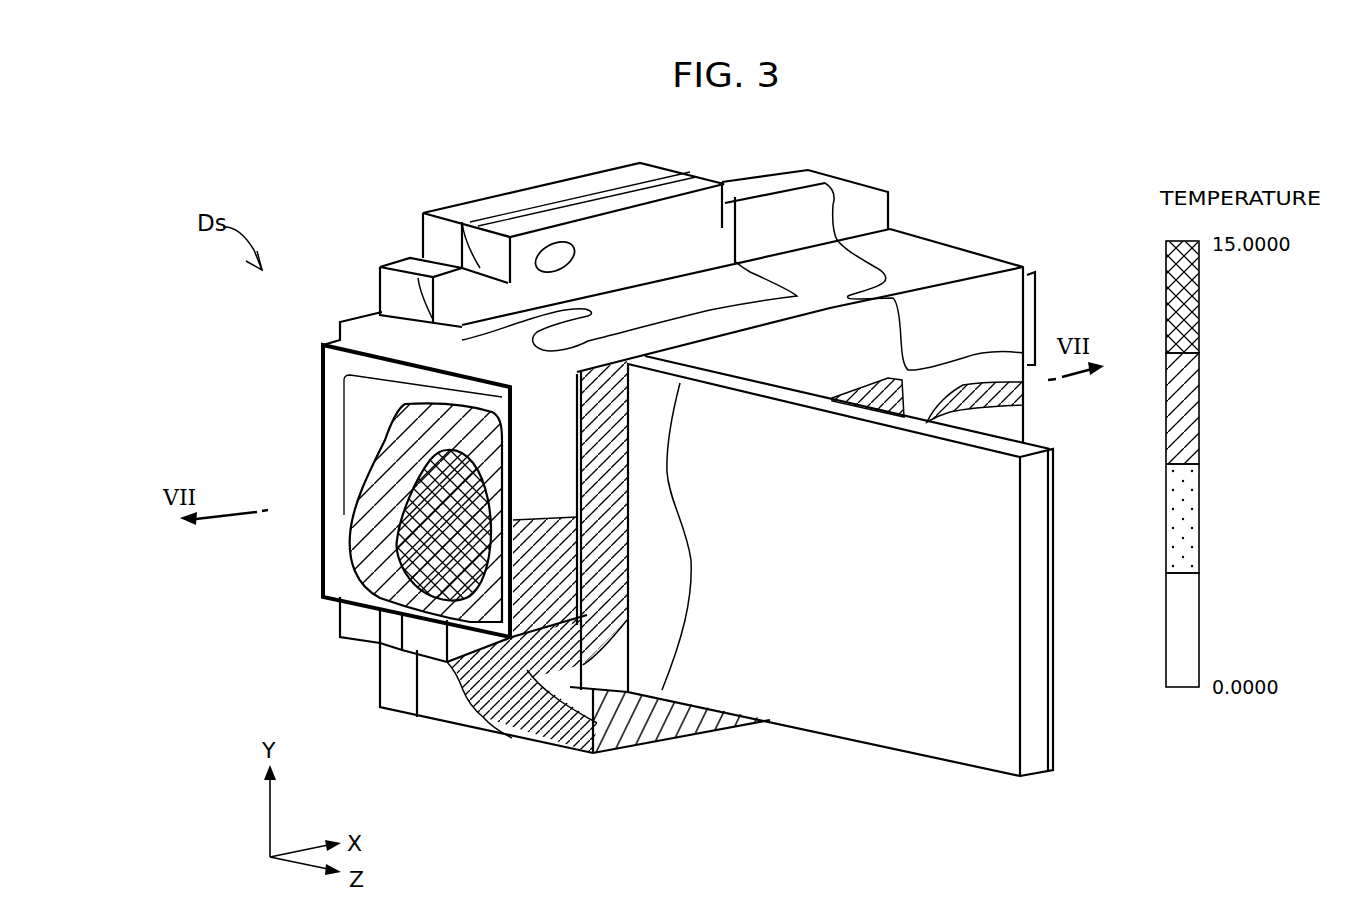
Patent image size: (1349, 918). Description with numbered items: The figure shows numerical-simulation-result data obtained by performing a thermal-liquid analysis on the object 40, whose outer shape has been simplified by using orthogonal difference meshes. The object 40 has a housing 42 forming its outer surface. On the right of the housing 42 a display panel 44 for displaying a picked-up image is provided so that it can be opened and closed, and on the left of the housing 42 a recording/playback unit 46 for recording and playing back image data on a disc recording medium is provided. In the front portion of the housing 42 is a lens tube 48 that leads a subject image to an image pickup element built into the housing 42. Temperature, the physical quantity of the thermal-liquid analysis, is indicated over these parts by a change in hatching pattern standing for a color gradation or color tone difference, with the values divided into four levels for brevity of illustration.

The object 40 is at (912, 175).
The housing 42 is at (933, 264).
The display panel 44 is at (997, 490).
The recording/playback unit 46 is at (405, 258).
The lens tube 48 is at (336, 388).